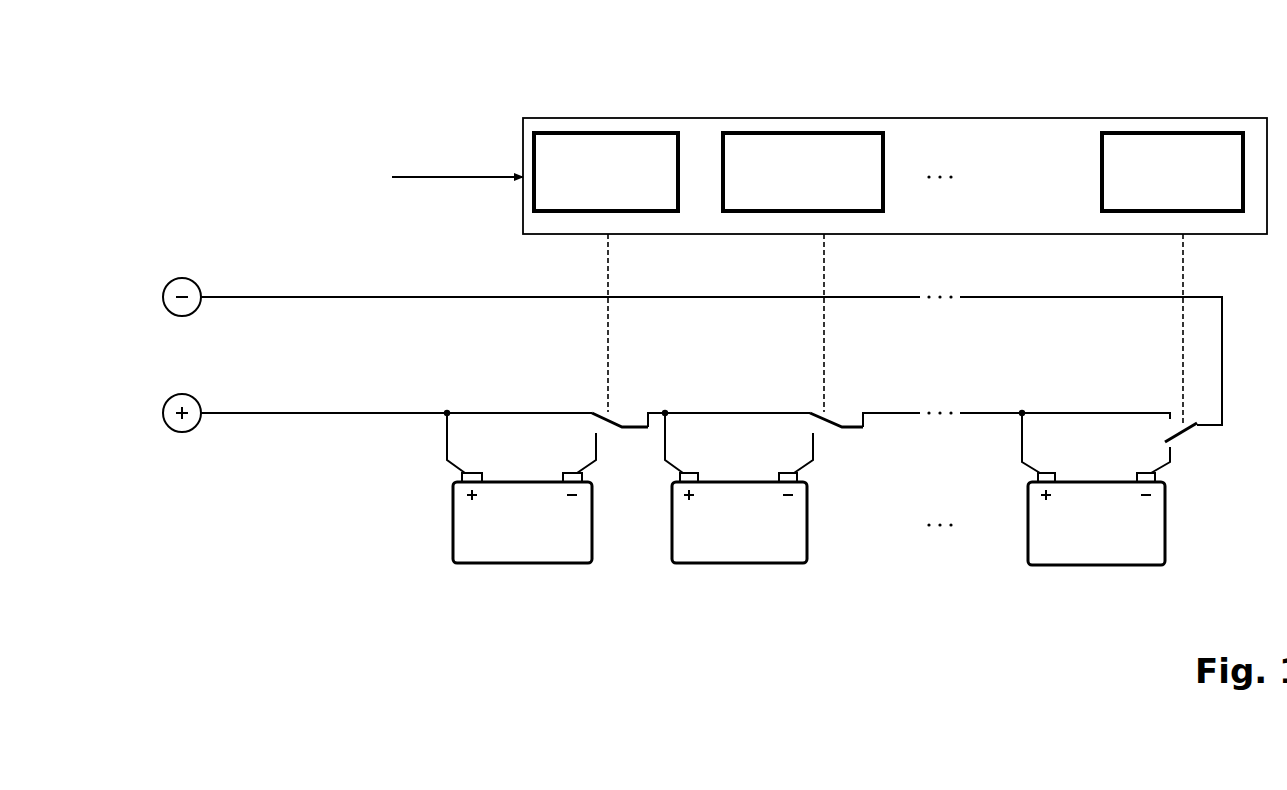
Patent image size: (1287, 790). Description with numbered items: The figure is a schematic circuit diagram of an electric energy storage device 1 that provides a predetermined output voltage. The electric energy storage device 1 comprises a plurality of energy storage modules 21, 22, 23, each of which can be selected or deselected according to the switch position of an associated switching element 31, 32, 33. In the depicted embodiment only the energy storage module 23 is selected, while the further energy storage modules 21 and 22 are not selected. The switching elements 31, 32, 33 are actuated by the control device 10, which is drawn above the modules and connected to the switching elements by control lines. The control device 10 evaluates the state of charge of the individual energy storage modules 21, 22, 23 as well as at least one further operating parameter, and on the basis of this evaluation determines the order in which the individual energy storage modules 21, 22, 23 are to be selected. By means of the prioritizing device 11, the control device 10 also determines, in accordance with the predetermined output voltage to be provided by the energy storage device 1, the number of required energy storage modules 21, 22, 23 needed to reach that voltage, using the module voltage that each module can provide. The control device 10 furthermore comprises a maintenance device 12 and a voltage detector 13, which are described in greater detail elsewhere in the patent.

The electric energy storage device 1 is at (236, 126).
The control device 10 is at (893, 118).
The prioritizing device 11 is at (605, 133).
The maintenance device 12 is at (823, 133).
The voltage detector 13 is at (1180, 133).
The energy storage module 21 is at (523, 563).
The energy storage module 22 is at (740, 563).
The energy storage module 23 is at (1097, 565).
The switching element 31 is at (614, 448).
The switching element 32 is at (830, 448).
The switching element 33 is at (1187, 448).